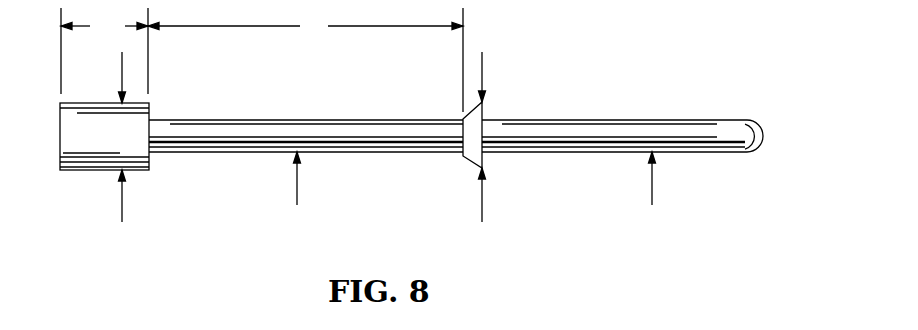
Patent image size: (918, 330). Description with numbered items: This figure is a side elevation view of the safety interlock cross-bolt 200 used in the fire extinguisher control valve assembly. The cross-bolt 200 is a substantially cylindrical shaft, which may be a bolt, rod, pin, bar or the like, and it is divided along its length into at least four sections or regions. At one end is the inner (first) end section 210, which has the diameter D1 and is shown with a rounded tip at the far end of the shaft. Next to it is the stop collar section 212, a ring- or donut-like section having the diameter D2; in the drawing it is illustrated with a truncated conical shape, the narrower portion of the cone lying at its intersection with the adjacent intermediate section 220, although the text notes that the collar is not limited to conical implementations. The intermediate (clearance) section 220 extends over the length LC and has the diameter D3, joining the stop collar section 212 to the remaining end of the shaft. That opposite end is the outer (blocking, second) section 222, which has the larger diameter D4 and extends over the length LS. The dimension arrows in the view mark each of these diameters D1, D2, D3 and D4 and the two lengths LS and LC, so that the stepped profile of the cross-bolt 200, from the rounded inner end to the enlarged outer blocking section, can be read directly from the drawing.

The safety interlock cross-bolt 200 is at (396, 150).
The inner end section 210 is at (722, 120).
The stop collar section 212 is at (483, 111).
The intermediate section 220 is at (408, 153).
The outer section 222 is at (75, 171).
The diameter of inner end section D1 is at (652, 193).
The diameter of stop collar section D2 is at (482, 208).
The diameter of intermediate section D3 is at (297, 193).
The diameter of outer section D4 is at (122, 208).
The length of outer section LS is at (104, 51).
The length of intermediate section LC is at (305, 60).